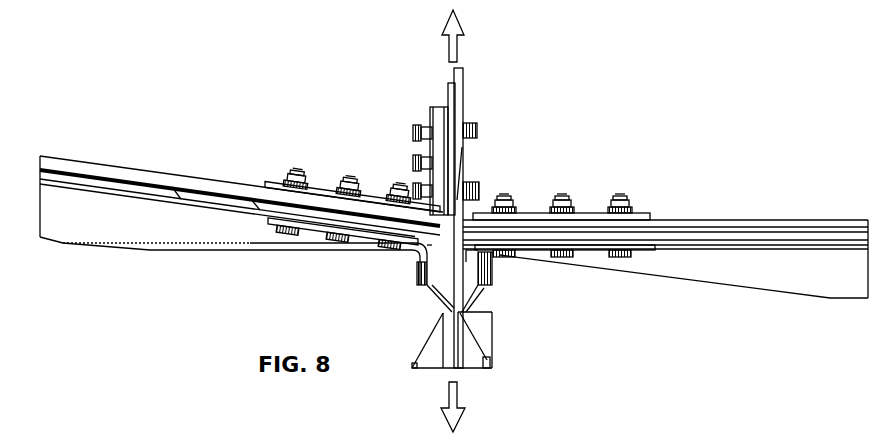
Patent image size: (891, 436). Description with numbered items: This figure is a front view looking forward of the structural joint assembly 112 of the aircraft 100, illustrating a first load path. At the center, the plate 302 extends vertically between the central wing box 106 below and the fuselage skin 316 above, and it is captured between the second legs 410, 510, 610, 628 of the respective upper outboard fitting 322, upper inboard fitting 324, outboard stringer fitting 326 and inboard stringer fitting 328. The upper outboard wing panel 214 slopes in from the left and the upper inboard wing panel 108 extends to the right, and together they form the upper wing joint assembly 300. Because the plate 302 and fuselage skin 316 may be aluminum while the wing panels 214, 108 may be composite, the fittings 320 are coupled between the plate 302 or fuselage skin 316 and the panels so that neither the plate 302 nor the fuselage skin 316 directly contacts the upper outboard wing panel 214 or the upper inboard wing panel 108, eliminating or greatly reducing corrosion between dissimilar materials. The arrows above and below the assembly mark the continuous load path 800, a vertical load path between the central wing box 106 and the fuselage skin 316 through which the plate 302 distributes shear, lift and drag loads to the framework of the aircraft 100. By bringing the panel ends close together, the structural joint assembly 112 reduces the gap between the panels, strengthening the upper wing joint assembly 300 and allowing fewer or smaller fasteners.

The aircraft 100 is at (133, 52).
The upper inboard wing panel 108 is at (745, 220).
The structural joint assembly 112 is at (388, 158).
The upper outboard wing panel 214 is at (105, 170).
The upper wing joint assembly 300 is at (278, 110).
The plate 302 is at (448, 299).
The fuselage skin 316 is at (447, 92).
The fittings 320 is at (460, 223).
The upper outboard fitting 322 is at (272, 184).
The upper inboard fitting 324 is at (667, 176).
The outboard stringer fitting 326 is at (325, 228).
The inboard stringer fitting 328 is at (583, 252).
The second leg 410 is at (430, 150).
The second leg 510 is at (417, 268).
The second leg 610 is at (468, 183).
The second leg 628 is at (490, 283).
The central wing box 106 is at (495, 333).
The load path 800 is at (458, 52).